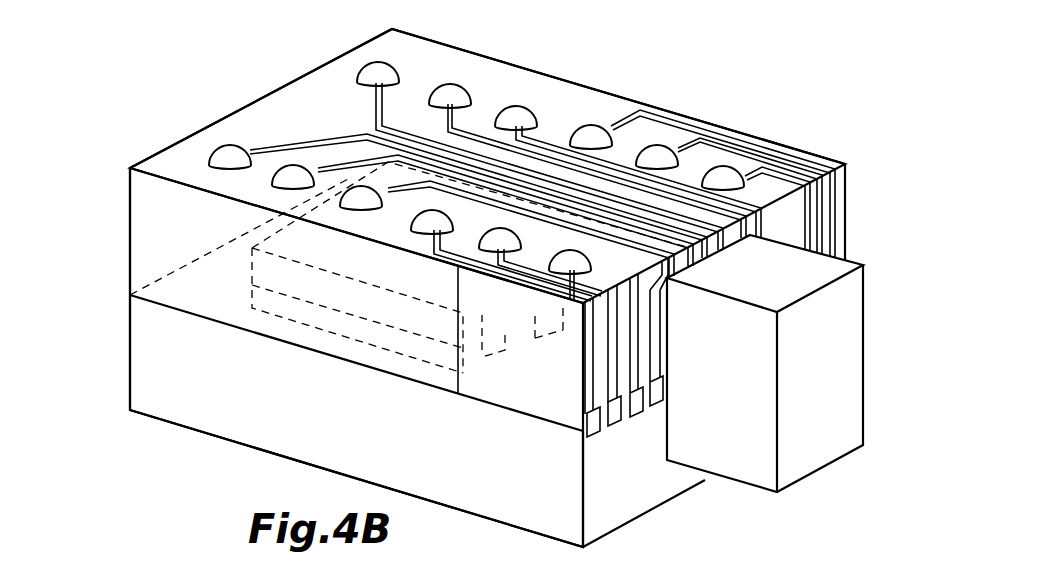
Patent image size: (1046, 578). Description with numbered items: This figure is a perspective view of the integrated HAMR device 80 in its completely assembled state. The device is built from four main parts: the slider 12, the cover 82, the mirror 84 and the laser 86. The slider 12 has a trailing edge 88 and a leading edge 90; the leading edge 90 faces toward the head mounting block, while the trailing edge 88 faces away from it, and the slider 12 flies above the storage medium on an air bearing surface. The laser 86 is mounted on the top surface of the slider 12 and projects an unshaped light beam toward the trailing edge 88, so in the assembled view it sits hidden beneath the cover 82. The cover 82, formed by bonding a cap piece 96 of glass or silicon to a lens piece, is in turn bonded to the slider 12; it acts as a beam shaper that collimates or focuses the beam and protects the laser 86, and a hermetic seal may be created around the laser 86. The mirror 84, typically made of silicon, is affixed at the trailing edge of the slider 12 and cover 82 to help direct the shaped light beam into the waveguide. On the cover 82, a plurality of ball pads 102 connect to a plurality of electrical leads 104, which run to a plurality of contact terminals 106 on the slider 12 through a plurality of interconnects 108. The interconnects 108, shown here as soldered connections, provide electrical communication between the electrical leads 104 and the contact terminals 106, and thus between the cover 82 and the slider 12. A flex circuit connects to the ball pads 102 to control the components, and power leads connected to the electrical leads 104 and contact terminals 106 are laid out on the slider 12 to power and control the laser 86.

The integrated HAMR device 80 is at (673, 95).
The cover 82 is at (477, 57).
The mirror 84 is at (832, 378).
The laser 86 is at (238, 262).
The trailing edge 88 is at (663, 497).
The leading edge 90 is at (130, 357).
The cap piece 96 is at (183, 168).
The slider 12 is at (258, 432).
The ball pads 102 is at (387, 68).
The electrical leads 104 is at (595, 366).
The contact terminals 106 is at (620, 436).
The interconnects 108 is at (585, 430).